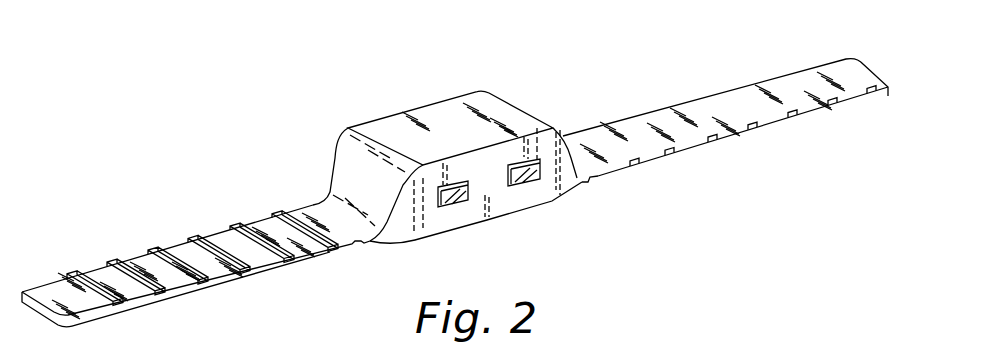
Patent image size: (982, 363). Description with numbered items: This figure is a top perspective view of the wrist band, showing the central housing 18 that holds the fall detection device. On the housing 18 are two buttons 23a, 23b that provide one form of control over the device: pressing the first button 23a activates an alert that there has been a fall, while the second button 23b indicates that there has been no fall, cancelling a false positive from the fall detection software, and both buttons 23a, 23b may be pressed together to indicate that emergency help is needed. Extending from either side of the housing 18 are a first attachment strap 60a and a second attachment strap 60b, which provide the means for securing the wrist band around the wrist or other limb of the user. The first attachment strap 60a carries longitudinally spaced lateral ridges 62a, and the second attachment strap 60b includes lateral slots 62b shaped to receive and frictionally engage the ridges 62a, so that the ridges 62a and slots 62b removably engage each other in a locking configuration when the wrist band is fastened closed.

The central housing 18 is at (368, 121).
The first button 23a is at (457, 203).
The second button 23b is at (533, 180).
The first attachment strap 60a is at (93, 272).
The second attachment strap 60b is at (688, 105).
The lateral ridges 62a is at (193, 240).
The lateral slots 62b is at (790, 127).